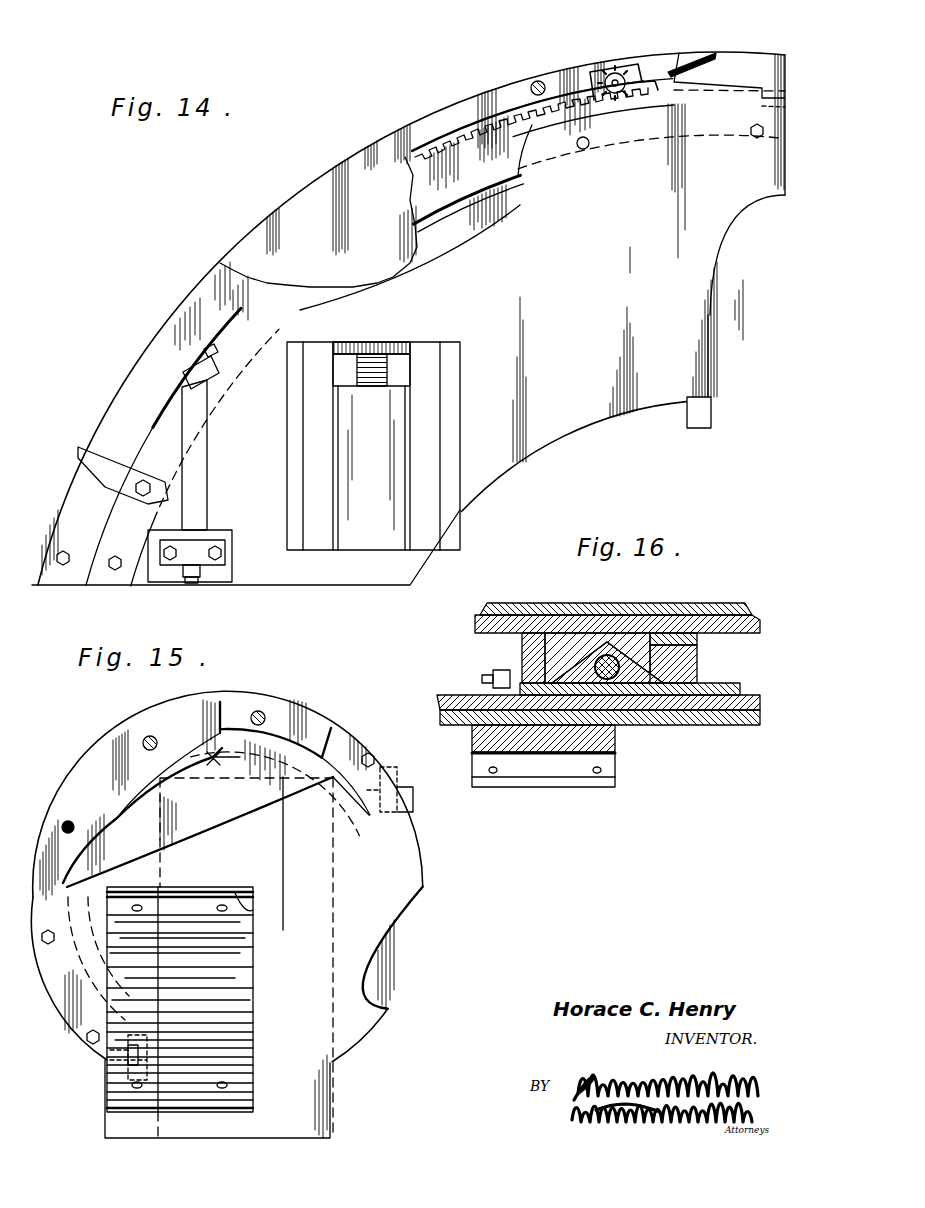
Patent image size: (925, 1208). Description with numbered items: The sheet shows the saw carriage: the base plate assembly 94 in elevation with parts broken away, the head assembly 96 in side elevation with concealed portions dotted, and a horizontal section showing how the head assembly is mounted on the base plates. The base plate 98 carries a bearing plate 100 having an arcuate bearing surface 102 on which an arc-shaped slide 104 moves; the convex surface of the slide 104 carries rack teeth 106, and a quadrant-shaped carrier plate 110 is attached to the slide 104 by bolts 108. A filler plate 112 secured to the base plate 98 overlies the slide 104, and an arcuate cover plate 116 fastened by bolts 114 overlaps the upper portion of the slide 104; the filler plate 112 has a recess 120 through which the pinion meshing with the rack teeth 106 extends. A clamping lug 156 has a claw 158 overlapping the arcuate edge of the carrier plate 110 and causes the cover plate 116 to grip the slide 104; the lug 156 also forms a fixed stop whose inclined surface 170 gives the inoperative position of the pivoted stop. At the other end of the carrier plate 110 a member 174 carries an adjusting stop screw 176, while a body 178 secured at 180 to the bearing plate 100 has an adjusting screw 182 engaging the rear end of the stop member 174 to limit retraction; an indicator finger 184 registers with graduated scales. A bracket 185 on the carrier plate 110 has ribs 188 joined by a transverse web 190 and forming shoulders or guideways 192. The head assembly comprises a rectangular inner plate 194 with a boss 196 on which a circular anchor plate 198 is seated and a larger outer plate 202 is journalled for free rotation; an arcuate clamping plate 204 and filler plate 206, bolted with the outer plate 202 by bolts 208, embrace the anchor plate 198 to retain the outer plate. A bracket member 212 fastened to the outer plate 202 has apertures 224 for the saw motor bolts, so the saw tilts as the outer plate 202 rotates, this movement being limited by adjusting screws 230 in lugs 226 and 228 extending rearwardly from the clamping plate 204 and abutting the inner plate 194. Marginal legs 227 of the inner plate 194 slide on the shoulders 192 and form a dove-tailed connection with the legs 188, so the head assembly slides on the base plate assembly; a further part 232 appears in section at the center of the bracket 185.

In FIG. 14, the ring assembly 94 is at (226, 240).
In FIG. 16, the ring assembly 94 is at (676, 607).
In FIG. 16, the carriage assembly 96 is at (673, 731).
In FIG. 15, the carriage assembly 96 is at (320, 702).
In FIG. 14, the base plate 98 is at (316, 190).
In FIG. 16, the base plate 98 is at (498, 603).
In FIG. 14, the bearing plate 100 is at (500, 210).
In FIG. 16, the bearing plate 100 is at (476, 620).
In FIG. 14, the arcuate bearing surface 102 is at (440, 215).
In FIG. 14, the slide 104 is at (405, 186).
In FIG. 14, the rack teeth 106 is at (485, 126).
In FIG. 14, the bolts 108 is at (589, 145).
In FIG. 14, the carrier plate 110 is at (552, 432).
In FIG. 16, the carrier plate 110 is at (480, 633).
In FIG. 14, the filler plate 112 is at (423, 124).
In FIG. 14, the fastening bolts 114 is at (538, 82).
In FIG. 14, the cover plate 116 is at (168, 330).
In FIG. 14, the recess 120 is at (605, 70).
In FIG. 14, the clamping lug 156 is at (735, 63).
In FIG. 14, the finger or claw 158 is at (760, 112).
In FIG. 14, the inclined stop surface 170 is at (690, 56).
In FIG. 14, the stop member 174 is at (200, 490).
In FIG. 14, the adjusting stop screw 176 is at (216, 360).
In FIG. 14, the stop body 178 is at (197, 548).
In FIG. 14, the securing means 180 is at (230, 552).
In FIG. 14, the adjusting screw 182 is at (194, 586).
In FIG. 14, the indicator finger 184 is at (112, 468).
In FIG. 14, the bracket 185 is at (360, 537).
In FIG. 16, the bracket 185 is at (572, 640).
In FIG. 14, the ribs 188 is at (430, 362).
In FIG. 16, the ribs 188 is at (535, 668).
In FIG. 14, the transverse web 190 is at (397, 372).
In FIG. 14, the guideways 192 is at (292, 410).
In FIG. 16, the guideways 192 is at (525, 655).
In FIG. 16, the inner plate 194 is at (628, 698).
In FIG. 15, the inner plate 194 is at (163, 782).
In FIG. 15, the boss 196 is at (252, 890).
In FIG. 16, the anchor plate 198 is at (760, 705).
In FIG. 15, the anchor plate 198 is at (216, 762).
In FIG. 16, the outer plate 202 is at (722, 725).
In FIG. 15, the outer plate 202 is at (392, 855).
In FIG. 16, the clamping plate 204 is at (742, 695).
In FIG. 15, the clamping plate 204 is at (110, 775).
In FIG. 15, the filler plate 206 is at (247, 713).
In FIG. 15, the fastening bolts 208 is at (67, 822).
In FIG. 16, the bracket member 212 is at (550, 755).
In FIG. 15, the bracket member 212 is at (243, 985).
In FIG. 16, the aperture 224 is at (600, 775).
In FIG. 15, the aperture 224 is at (147, 907).
In FIG. 15, the lug 226 is at (412, 806).
In FIG. 16, the marginal legs 227 is at (700, 665).
In FIG. 16, the lug 228 is at (482, 684).
In FIG. 15, the lug 228 is at (107, 1082).
In FIG. 16, the adjusting screws 230 is at (490, 678).
In FIG. 15, the adjusting screws 230 is at (400, 774).
In FIG. 16, the shaft 232 is at (610, 655).